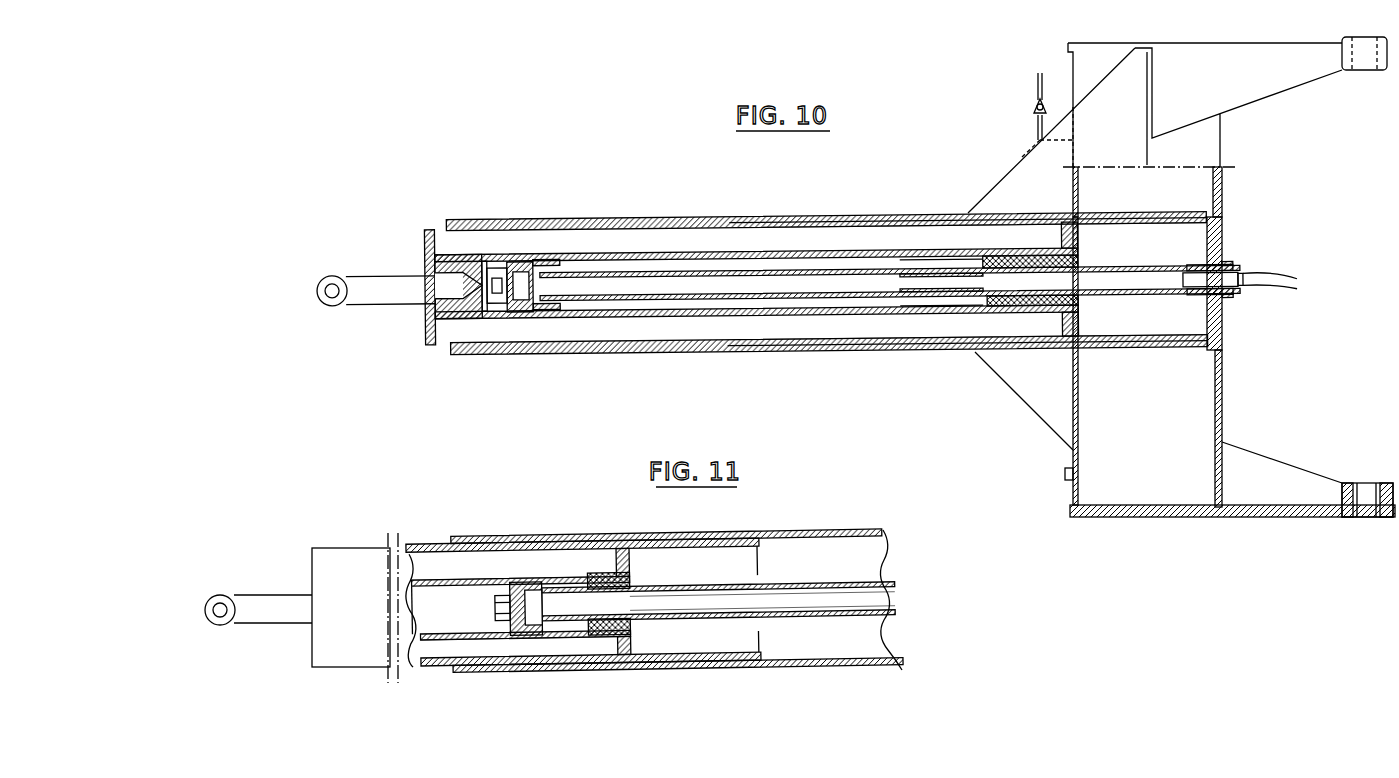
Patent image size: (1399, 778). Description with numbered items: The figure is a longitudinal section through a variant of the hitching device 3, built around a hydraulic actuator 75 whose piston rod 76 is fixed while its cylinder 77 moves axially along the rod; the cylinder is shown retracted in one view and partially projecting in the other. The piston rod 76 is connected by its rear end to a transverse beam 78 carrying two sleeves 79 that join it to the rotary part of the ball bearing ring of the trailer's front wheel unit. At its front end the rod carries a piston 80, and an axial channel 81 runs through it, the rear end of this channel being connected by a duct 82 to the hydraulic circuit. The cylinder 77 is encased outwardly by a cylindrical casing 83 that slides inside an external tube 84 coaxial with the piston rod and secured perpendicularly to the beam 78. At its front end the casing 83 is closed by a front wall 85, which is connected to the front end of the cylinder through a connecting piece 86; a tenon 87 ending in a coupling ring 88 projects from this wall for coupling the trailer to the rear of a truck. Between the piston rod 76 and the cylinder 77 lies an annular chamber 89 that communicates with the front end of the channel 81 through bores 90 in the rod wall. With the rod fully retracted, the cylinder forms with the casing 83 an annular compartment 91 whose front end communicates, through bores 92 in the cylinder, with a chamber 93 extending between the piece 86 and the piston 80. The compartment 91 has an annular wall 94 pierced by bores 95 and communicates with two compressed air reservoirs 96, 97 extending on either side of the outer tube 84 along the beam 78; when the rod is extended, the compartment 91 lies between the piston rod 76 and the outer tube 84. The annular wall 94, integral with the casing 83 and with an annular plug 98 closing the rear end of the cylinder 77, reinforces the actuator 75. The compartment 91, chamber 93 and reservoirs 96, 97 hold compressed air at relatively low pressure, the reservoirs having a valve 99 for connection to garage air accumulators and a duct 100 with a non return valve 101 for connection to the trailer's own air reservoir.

In FIG. 10, the hitching device 3 is at (779, 357).
In FIG. 10, the hydraulic actuator 75 is at (687, 324).
In FIG. 10, the piston rod 76 is at (873, 292).
In FIG. 11, the piston rod 76 is at (890, 573).
In FIG. 10, the cylinder 77 is at (920, 310).
In FIG. 10, the transverse beam 78 is at (1222, 327).
In FIG. 10, the sleeves 79 is at (1353, 62).
In FIG. 10, the piston 80 is at (523, 318).
In FIG. 11, the piston 80 is at (518, 630).
In FIG. 10, the axial channel 81 is at (617, 280).
In FIG. 11, the axial channel 81 is at (890, 598).
In FIG. 10, the duct 82 is at (1273, 282).
In FIG. 10, the cylindrical casing 83 is at (827, 347).
In FIG. 11, the cylindrical casing 83 is at (690, 670).
In FIG. 10, the external tube 84 is at (613, 352).
In FIG. 11, the external tube 84 is at (777, 669).
In FIG. 10, the front wall 85 is at (425, 322).
In FIG. 10, the connecting piece 86 is at (450, 320).
In FIG. 10, the tenon 87 is at (378, 290).
In FIG. 11, the tenon 87 is at (268, 607).
In FIG. 10, the coupling ring 88 is at (333, 272).
In FIG. 11, the coupling ring 88 is at (222, 596).
In FIG. 10, the annular chamber 89 is at (722, 258).
In FIG. 10, the bores 90 is at (558, 316).
In FIG. 10, the annular compartment 91 is at (805, 234).
In FIG. 11, the annular compartment 91 is at (857, 640).
In FIG. 10, the bores 92 is at (493, 317).
In FIG. 10, the chamber 93 is at (490, 264).
In FIG. 11, the chamber 93 is at (443, 612).
In FIG. 10, the annular wall 94 is at (1057, 226).
In FIG. 11, the annular wall 94 is at (615, 548).
In FIG. 10, the bores 95 is at (1060, 316).
In FIG. 11, the bores 95 is at (617, 645).
In FIG. 10, the compressed air reservoir 96 is at (1161, 439).
In FIG. 10, the compressed air reservoir 97 is at (1168, 196).
In FIG. 10, the annular plug 98 is at (1000, 347).
In FIG. 11, the annular plug 98 is at (630, 645).
In FIG. 10, the valve 99 is at (1065, 476).
In FIG. 10, the duct 100 is at (1023, 157).
In FIG. 10, the non return valve 101 is at (1035, 105).